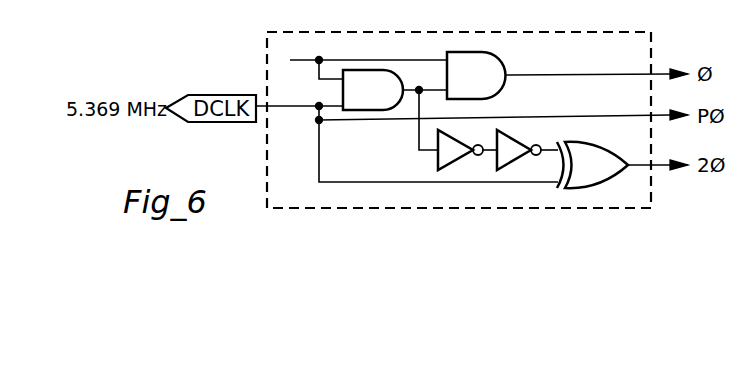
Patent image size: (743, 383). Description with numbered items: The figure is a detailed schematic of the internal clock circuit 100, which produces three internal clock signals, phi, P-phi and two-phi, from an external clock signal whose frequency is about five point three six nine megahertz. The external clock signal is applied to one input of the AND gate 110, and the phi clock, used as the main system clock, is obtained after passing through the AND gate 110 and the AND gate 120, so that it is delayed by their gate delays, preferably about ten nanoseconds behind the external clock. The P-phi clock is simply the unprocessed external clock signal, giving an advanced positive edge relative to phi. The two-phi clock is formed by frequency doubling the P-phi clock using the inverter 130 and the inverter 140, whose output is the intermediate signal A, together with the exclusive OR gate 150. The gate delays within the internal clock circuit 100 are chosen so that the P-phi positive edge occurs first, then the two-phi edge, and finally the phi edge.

The internal clock circuit 100 is at (528, 28).
The AND gate 110 is at (374, 101).
The AND gate 120 is at (478, 84).
The inverter 130 is at (440, 165).
The inverter 140 is at (497, 142).
The exclusive OR gate 150 is at (601, 177).